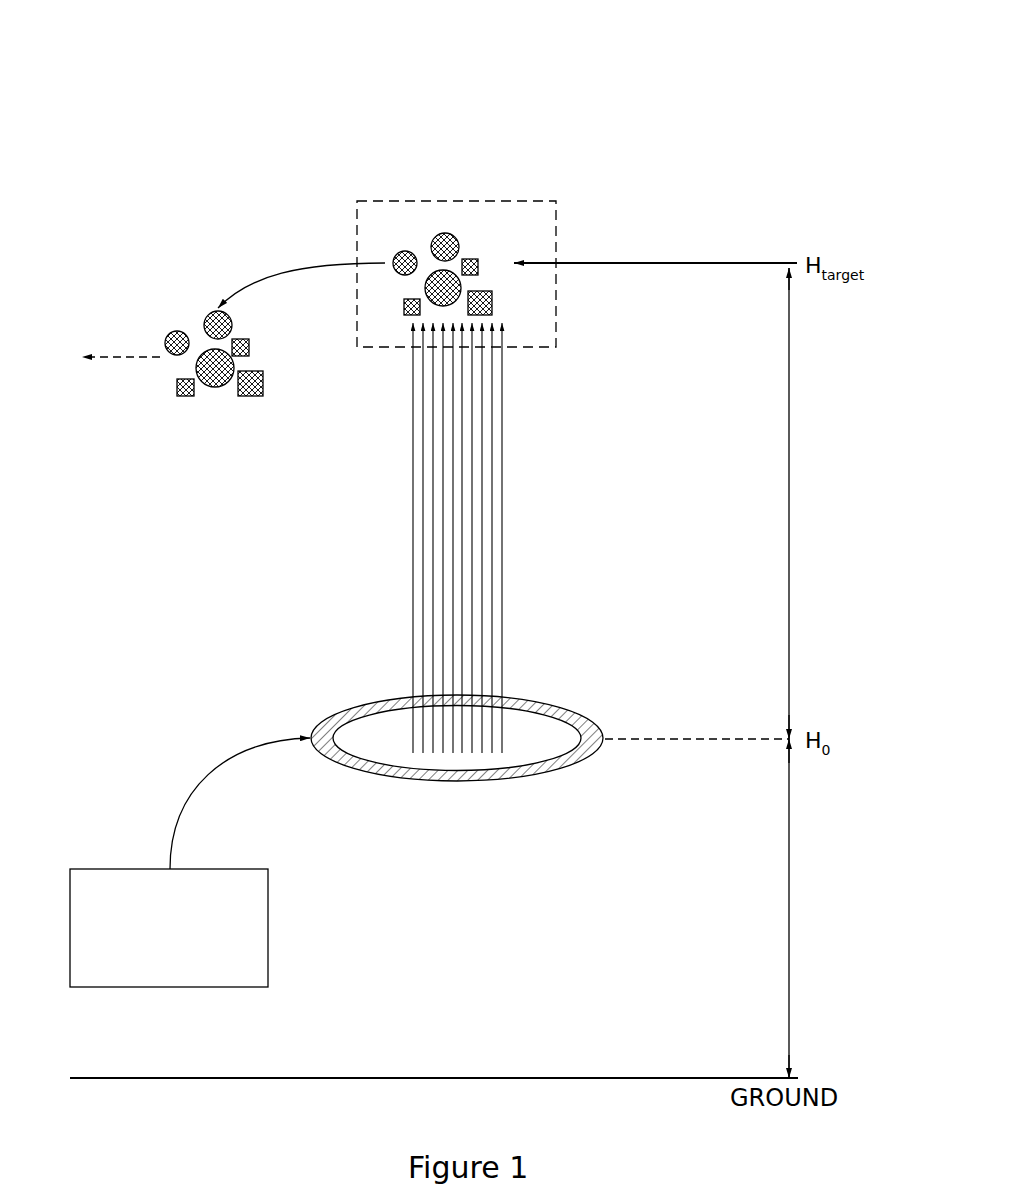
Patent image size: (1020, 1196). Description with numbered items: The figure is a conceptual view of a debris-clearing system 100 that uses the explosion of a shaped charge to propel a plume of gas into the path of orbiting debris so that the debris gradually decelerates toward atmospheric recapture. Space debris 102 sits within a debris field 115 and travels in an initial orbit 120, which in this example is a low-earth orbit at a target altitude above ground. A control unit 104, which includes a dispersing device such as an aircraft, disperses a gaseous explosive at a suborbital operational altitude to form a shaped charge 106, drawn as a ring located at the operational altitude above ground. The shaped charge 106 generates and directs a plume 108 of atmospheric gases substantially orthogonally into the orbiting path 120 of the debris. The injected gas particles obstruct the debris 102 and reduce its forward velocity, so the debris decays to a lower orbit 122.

The debris-clearing system 100 is at (758, 112).
The space debris 102 is at (451, 225).
The control unit 104 is at (268, 975).
The shaped charge 106 is at (578, 760).
The plume 108 is at (502, 542).
The debris field 115 is at (553, 201).
The initial orbit 120 is at (657, 262).
The lower orbit 122 is at (137, 330).